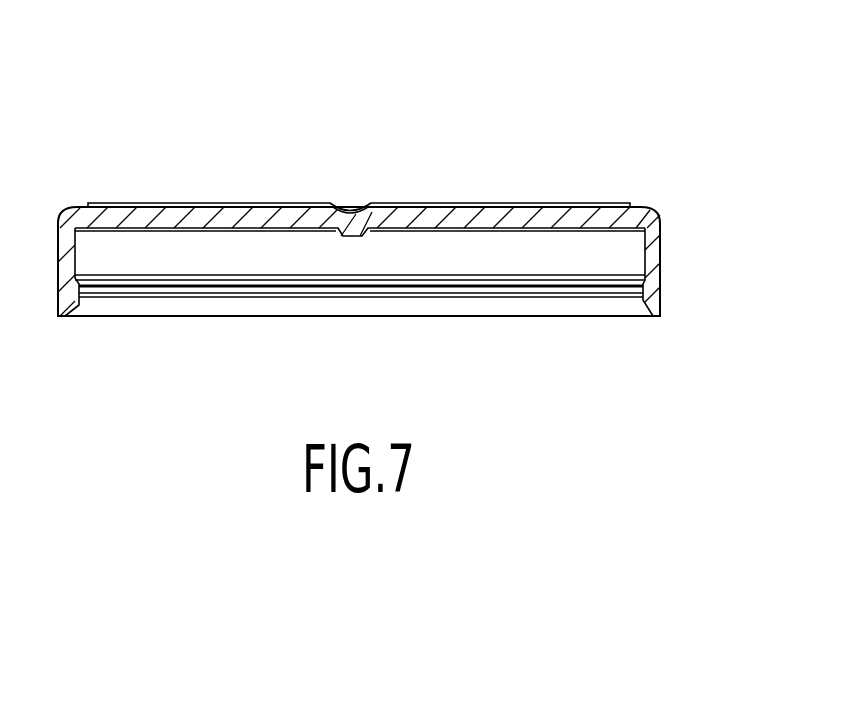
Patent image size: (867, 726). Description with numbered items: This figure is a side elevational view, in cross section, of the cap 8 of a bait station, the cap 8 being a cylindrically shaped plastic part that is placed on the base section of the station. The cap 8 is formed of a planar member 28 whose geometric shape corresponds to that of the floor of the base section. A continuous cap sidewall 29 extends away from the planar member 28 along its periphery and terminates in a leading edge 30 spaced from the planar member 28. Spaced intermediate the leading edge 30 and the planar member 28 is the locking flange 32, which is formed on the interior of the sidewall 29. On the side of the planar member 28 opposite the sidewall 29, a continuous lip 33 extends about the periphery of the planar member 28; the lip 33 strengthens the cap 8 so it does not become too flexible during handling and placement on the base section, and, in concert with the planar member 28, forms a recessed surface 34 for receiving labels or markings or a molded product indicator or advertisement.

The cap 8 is at (418, 146).
The planar member 28 is at (189, 222).
The cap sidewall 29 is at (652, 262).
The leading edge 30 is at (658, 316).
The locking flange 32 is at (632, 294).
The lip 33 is at (633, 204).
The recessed surface 34 is at (312, 205).